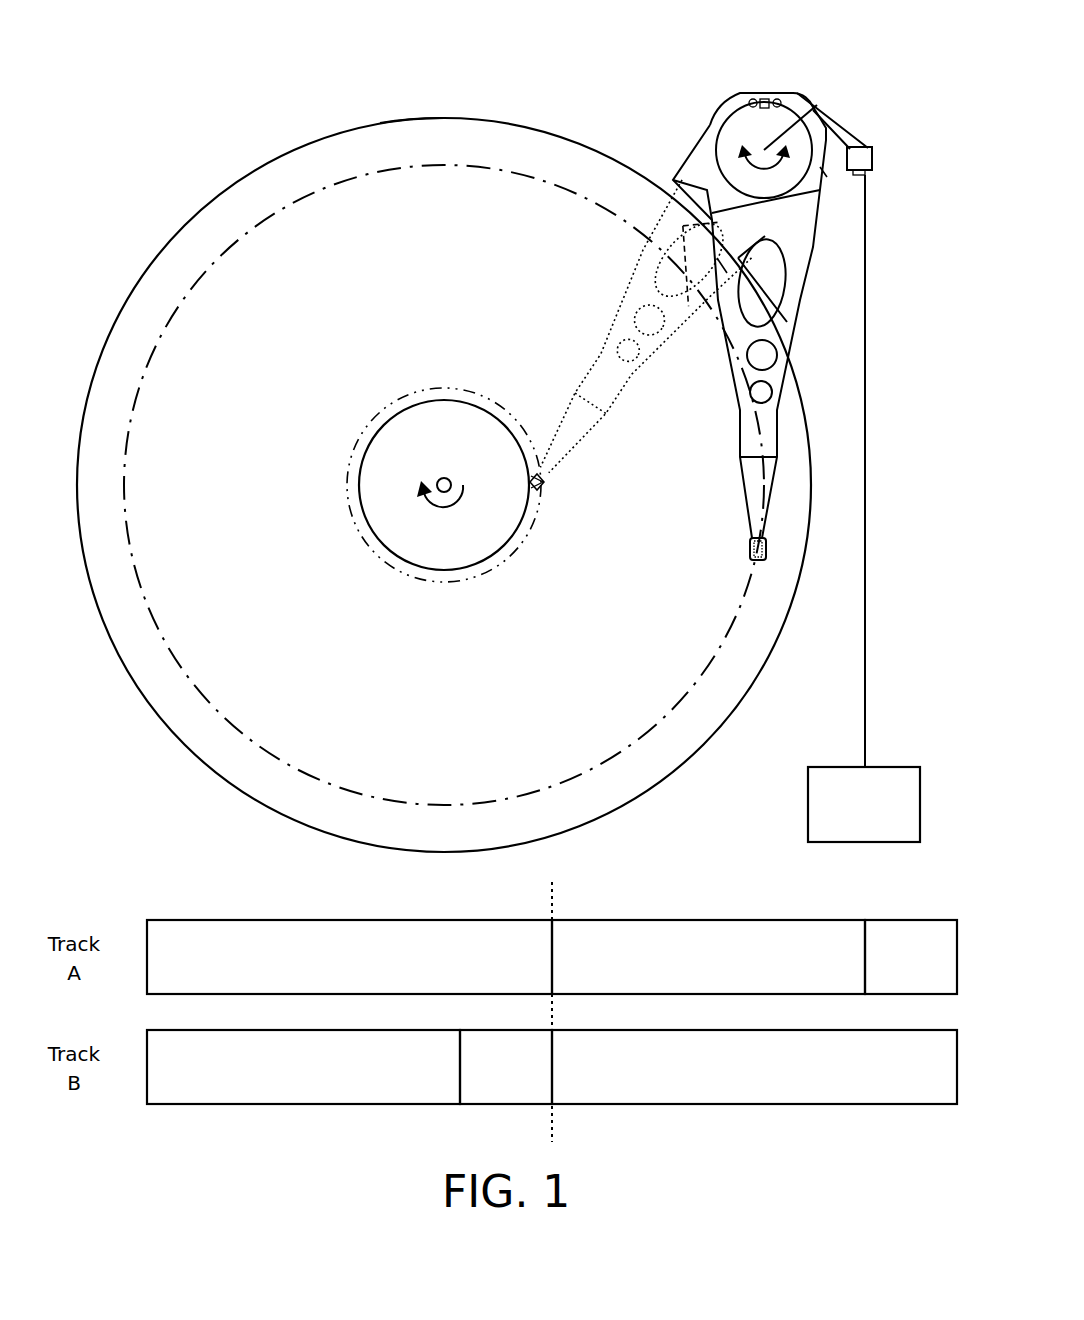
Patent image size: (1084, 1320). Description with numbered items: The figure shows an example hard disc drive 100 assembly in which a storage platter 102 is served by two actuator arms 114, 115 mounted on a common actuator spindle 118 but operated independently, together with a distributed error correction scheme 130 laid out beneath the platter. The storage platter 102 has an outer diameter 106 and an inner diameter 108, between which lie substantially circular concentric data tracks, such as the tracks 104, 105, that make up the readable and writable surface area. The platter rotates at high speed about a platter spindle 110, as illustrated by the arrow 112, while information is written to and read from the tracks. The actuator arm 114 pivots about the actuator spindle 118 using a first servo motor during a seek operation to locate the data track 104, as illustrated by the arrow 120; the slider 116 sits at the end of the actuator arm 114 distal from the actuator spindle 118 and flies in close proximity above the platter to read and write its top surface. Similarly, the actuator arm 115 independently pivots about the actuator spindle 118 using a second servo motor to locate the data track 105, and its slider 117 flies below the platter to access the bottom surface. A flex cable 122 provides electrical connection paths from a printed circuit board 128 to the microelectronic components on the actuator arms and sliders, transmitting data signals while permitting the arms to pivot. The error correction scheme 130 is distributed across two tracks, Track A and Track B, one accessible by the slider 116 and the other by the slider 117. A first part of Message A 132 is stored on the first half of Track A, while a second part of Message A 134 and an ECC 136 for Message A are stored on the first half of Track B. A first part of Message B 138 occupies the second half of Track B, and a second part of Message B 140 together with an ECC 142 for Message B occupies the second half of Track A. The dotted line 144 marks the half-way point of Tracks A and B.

The hard disc drive 100 is at (189, 97).
The storage platter 102 is at (468, 730).
The data track 104 is at (662, 715).
The data track 105 is at (347, 465).
The outer diameter 106 is at (380, 121).
The inner diameter 108 is at (437, 400).
The platter spindle 110 is at (437, 480).
The arrow 112 is at (449, 489).
The actuator arm 114 is at (810, 236).
The actuator arm 115 is at (692, 152).
The slider 116 is at (752, 543).
The slider 117 is at (548, 484).
The actuator spindle 118 is at (764, 150).
The arrow 120 is at (813, 108).
The flex cable 122 is at (865, 510).
The printed circuit board 128 is at (845, 831).
The error correction scheme 130 is at (171, 865).
The first part of Message A 132 is at (331, 983).
The second part of Message A 134 is at (284, 1093).
The ECC for Message A 136 is at (487, 1093).
The first part of Message B 138 is at (735, 1093).
The second part of Message B 140 is at (689, 983).
The ECC for Message B 142 is at (892, 983).
The dotted line 144 is at (552, 909).